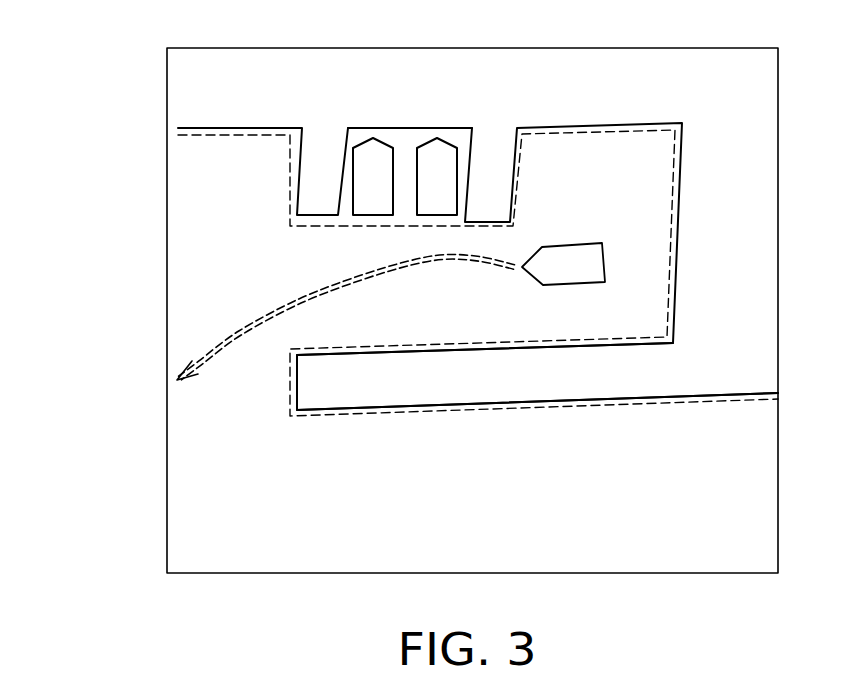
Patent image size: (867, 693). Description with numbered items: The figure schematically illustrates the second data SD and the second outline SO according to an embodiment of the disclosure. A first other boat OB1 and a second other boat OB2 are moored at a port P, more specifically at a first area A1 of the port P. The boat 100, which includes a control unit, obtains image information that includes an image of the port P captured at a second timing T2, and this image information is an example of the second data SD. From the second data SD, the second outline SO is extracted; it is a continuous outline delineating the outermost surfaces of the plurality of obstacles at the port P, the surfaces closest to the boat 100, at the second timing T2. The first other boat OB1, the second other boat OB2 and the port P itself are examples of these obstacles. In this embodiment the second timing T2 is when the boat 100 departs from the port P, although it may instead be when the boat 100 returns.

The second data SD is at (415, 269).
The second outline SO is at (222, 135).
The first area A1 is at (405, 143).
The first other boat OB1 is at (437, 176).
The second other boat OB2 is at (373, 176).
The boat 100 is at (563, 264).
The second timing T2 is at (346, 317).
The port P is at (537, 376).